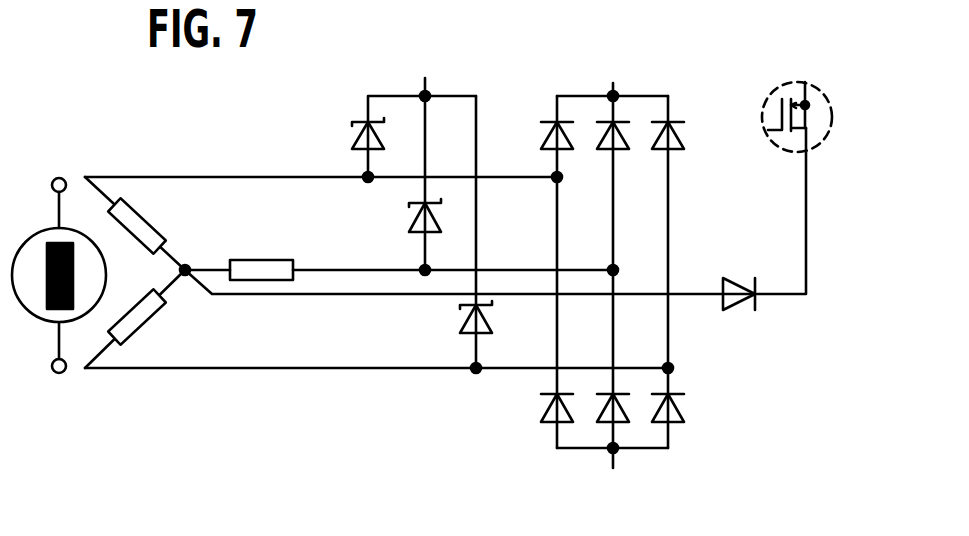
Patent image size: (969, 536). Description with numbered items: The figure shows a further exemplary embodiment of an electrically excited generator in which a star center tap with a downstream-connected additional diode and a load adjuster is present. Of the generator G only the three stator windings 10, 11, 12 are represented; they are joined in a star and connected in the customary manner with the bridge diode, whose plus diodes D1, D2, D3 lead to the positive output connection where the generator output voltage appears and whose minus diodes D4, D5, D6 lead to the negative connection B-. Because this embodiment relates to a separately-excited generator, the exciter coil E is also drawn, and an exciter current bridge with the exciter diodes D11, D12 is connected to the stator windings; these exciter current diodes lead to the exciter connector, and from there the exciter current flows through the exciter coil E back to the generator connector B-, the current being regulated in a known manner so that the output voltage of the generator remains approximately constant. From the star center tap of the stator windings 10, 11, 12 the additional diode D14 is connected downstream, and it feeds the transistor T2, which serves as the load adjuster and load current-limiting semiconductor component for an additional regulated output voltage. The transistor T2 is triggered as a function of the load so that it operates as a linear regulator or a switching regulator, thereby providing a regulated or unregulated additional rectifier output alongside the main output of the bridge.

The stator winding 10 is at (287, 259).
The stator winding 11 is at (157, 227).
The stator winding 12 is at (143, 320).
The exciter coil E is at (72, 251).
The generator G is at (159, 272).
The plus diode D1 is at (546, 140).
The plus diode D2 is at (600, 146).
The plus diode D3 is at (681, 138).
The minus diode D4 is at (543, 414).
The minus diode D5 is at (604, 408).
The minus diode D6 is at (677, 404).
The exciter diode D11 is at (352, 135).
The exciter diode D12 is at (409, 217).
The additional diode D14 is at (735, 306).
The transistor T2 is at (828, 134).
The negative connection B− B- is at (612, 476).